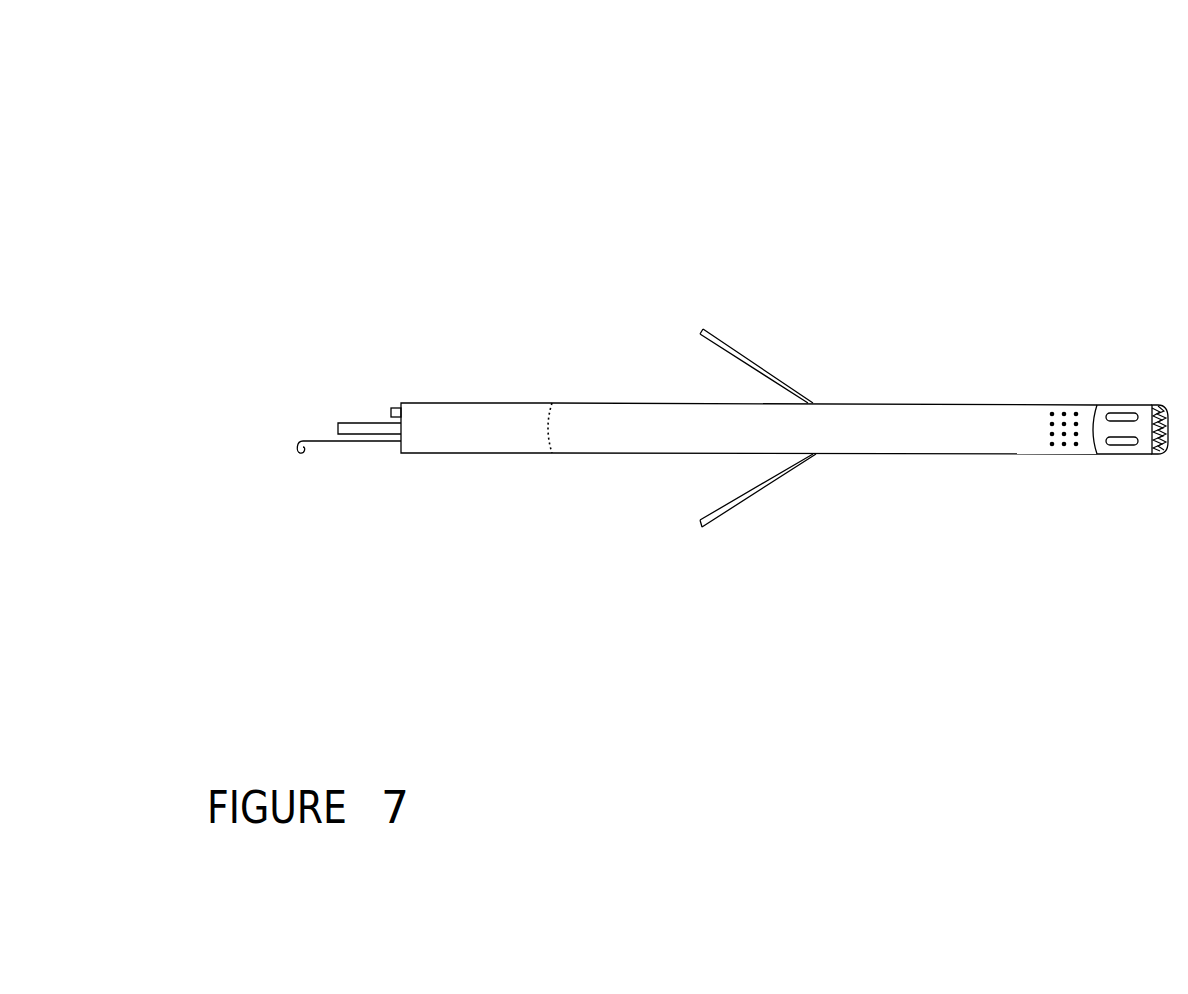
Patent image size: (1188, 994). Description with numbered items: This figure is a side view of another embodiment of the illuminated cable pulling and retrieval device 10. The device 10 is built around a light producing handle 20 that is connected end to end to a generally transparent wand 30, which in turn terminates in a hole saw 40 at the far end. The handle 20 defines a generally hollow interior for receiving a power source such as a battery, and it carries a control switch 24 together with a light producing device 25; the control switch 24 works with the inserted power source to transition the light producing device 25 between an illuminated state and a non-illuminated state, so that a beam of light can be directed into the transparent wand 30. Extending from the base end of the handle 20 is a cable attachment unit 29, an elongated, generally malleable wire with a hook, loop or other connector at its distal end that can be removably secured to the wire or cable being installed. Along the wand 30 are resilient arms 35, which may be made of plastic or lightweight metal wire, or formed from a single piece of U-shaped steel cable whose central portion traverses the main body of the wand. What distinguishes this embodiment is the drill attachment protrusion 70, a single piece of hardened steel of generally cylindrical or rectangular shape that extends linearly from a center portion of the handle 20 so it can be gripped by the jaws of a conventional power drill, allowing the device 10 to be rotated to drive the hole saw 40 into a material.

The illuminated cable pulling and retrieval device 10 is at (306, 134).
The light producing handle 20 is at (485, 441).
The control switch 24 is at (434, 351).
The light producing device 25 is at (602, 398).
The cable attachment unit 29 is at (329, 483).
The transparent wand 30 is at (788, 444).
The arms 35 is at (797, 430).
The hole saw 40 is at (1134, 380).
The drill attachment protrusion 70 is at (316, 380).